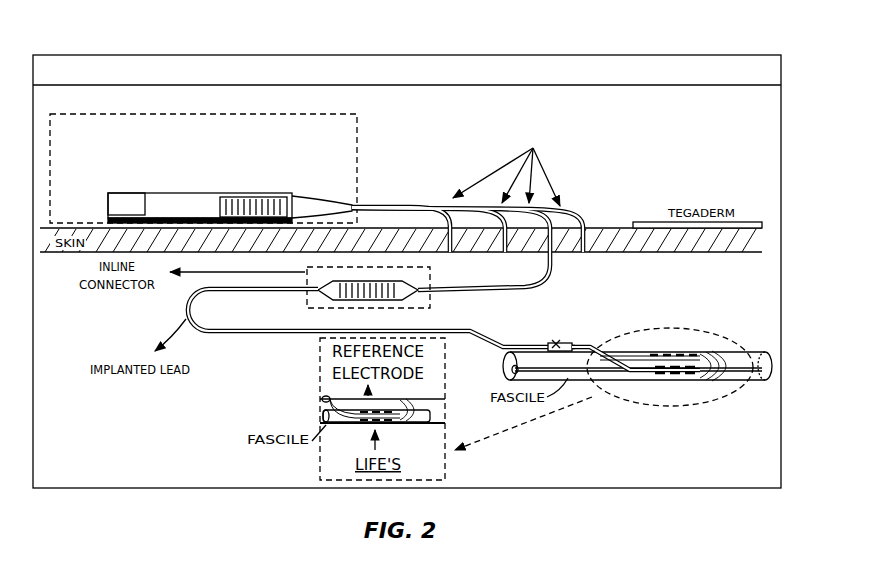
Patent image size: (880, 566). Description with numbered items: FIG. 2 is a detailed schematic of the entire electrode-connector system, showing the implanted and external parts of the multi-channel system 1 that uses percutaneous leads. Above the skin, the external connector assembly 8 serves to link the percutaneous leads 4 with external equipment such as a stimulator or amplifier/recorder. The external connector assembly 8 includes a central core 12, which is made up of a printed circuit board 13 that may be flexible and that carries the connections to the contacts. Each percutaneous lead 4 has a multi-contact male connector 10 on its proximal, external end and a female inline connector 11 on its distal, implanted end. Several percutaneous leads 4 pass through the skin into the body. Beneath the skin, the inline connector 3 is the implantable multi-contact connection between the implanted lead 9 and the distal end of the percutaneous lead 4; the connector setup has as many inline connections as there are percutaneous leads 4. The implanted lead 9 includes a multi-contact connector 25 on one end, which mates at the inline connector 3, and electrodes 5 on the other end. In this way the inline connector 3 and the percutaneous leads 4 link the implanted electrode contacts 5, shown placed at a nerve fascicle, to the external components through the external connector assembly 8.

The multi-channel system 1 is at (170, 47).
The external connector assembly 8 is at (357, 124).
The central core 12 is at (177, 193).
The printed circuit board 13 is at (108, 205).
The multi-contact male connector 10 is at (310, 196).
The percutaneous leads 4 is at (412, 206).
The inline connector 3 is at (430, 276).
The female inline connector 11 is at (408, 298).
The multi-contact connector 25 is at (318, 292).
The implanted leads 9 is at (282, 334).
The implanted electrode contacts 5 is at (705, 329).